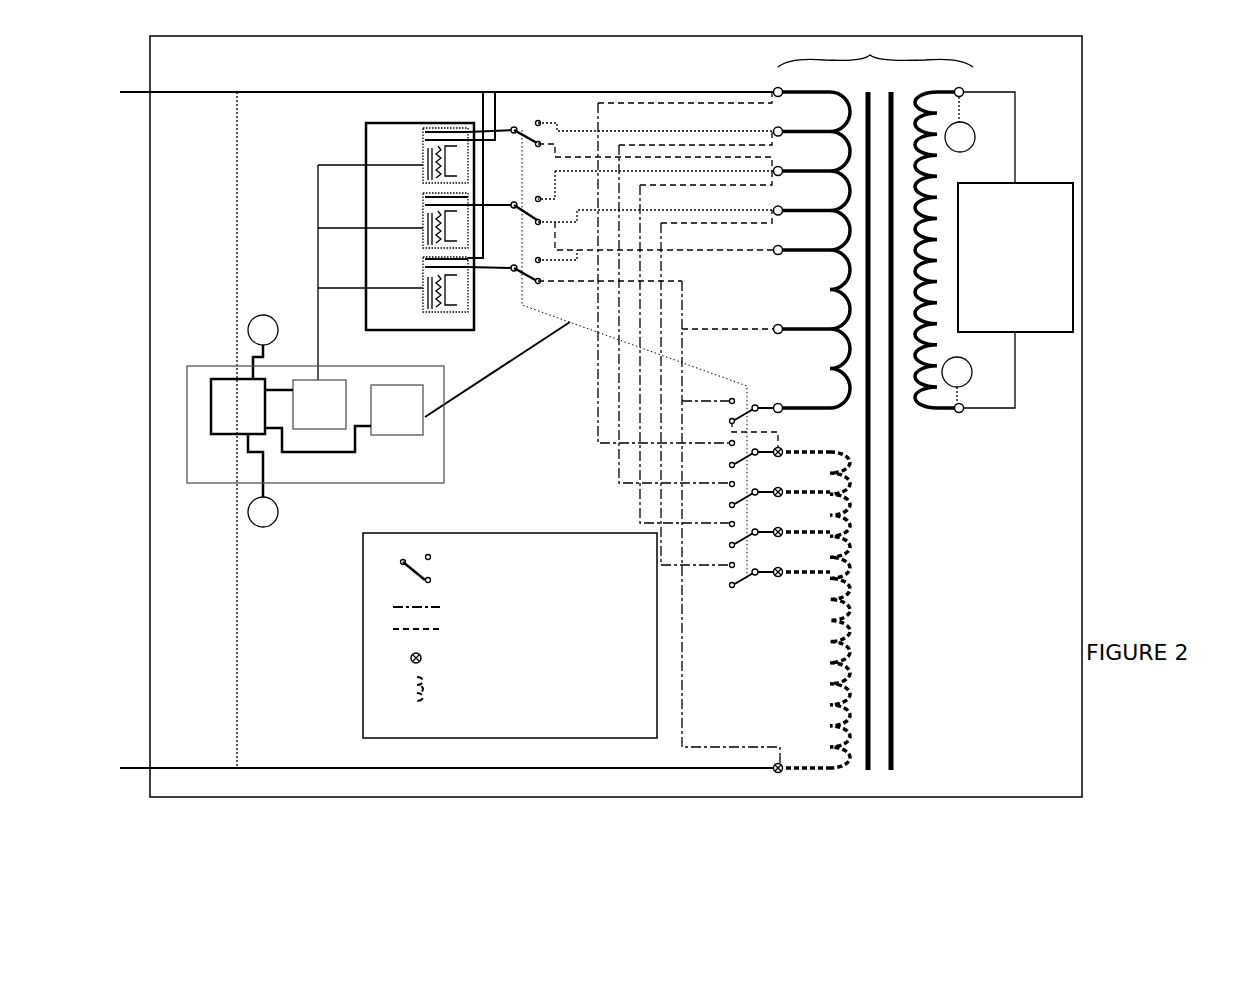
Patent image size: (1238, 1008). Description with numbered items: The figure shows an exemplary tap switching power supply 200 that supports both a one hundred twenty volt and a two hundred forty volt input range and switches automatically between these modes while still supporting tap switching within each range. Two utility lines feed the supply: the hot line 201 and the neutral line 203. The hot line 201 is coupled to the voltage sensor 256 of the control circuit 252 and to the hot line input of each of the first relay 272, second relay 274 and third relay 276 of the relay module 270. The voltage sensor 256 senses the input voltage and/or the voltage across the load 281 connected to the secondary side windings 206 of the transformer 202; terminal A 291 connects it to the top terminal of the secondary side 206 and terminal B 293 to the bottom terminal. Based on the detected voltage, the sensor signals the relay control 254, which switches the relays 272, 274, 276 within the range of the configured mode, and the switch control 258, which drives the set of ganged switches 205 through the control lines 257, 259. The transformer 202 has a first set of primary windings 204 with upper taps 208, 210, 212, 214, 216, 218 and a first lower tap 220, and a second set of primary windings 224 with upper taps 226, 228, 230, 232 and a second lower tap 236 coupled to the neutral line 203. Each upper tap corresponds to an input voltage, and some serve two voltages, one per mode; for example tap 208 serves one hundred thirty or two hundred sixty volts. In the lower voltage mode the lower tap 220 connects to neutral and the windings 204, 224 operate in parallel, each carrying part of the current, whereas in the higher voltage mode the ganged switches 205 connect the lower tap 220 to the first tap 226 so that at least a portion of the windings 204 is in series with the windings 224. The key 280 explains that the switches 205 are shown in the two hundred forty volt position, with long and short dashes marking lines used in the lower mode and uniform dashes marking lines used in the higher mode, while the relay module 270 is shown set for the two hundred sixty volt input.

The power supply 200 is at (616, 38).
The hot line 201 is at (198, 95).
The transformer 202 is at (875, 405).
The neutral line 203 is at (198, 771).
The first set of primary windings 204 is at (815, 82).
The ganged switches 205 is at (532, 78).
The secondary side windings 206 is at (922, 84).
The tap 208 is at (782, 97).
The tap 210 is at (782, 136).
The tap 212 is at (782, 176).
The tap 214 is at (782, 215).
The tap 216 is at (782, 255).
The tap 218 is at (782, 334).
The first lower tap 220 is at (781, 403).
The second set of primary windings 224 is at (826, 426).
The tap 226 is at (782, 457).
The tap 228 is at (782, 497).
The tap 230 is at (782, 537).
The tap 232 is at (782, 577).
The second lower tap 236 is at (782, 763).
The control circuit 252 is at (313, 409).
The relay control 254 is at (340, 396).
The voltage sensor 256 is at (229, 443).
The control line 257 is at (500, 362).
The switch control 258 is at (396, 435).
The ganged switch control line 259 is at (586, 330).
The relay module 270 is at (396, 249).
The first relay 272 is at (421, 152).
The second relay 274 is at (421, 205).
The third relay 276 is at (421, 269).
The key 280 is at (362, 631).
The load 281 is at (1030, 183).
The terminal A 291 is at (972, 133).
The terminal B 293 is at (968, 364).